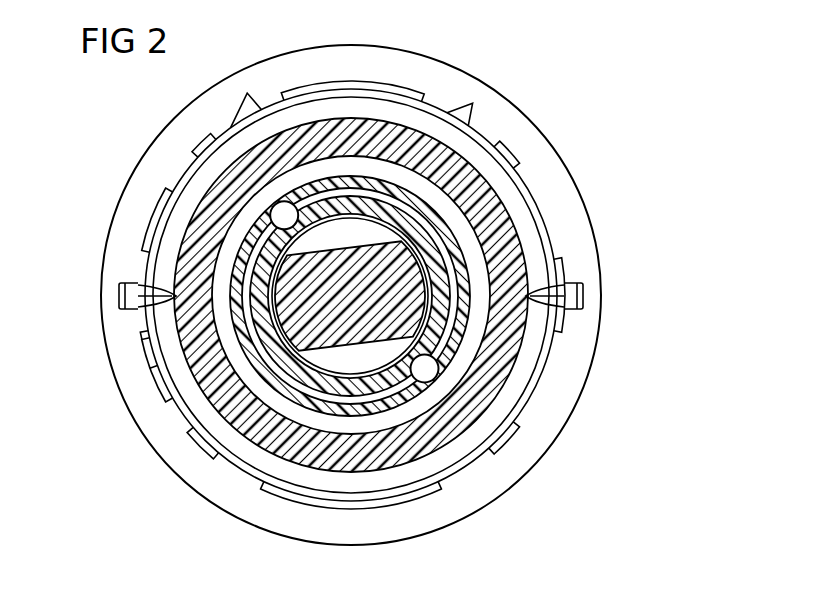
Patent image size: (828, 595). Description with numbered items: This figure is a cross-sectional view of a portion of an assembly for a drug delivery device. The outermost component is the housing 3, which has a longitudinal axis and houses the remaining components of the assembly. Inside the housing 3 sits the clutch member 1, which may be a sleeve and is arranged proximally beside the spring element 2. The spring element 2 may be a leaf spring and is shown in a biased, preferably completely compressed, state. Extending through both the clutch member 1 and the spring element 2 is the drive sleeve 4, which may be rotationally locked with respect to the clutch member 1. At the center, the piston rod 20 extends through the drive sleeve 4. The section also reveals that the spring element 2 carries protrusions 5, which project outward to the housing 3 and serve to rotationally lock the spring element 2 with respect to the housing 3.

The clutch member 1 is at (492, 351).
The spring element 2 is at (320, 265).
The housing 3 is at (502, 125).
The drive sleeve 4 is at (399, 117).
The protrusions 5 is at (138, 290).
The piston rod 20 is at (392, 282).